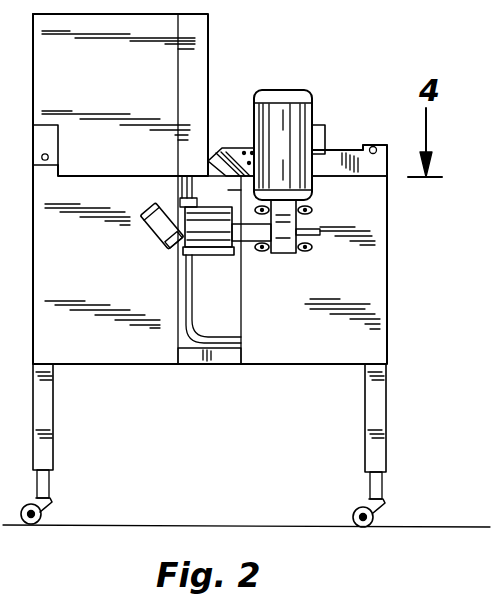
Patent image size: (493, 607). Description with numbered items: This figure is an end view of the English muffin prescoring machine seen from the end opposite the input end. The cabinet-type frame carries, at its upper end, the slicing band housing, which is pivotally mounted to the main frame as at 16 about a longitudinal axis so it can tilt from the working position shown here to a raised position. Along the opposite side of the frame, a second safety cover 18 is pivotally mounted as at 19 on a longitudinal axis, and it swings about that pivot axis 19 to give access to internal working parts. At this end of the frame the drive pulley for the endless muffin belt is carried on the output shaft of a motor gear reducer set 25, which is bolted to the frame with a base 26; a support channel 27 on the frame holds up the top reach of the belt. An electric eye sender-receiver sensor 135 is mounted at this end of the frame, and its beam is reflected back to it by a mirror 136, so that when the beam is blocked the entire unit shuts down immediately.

The pivot axis 16 is at (44, 168).
The second safety cover 18 is at (336, 158).
The pivot axis 19 is at (374, 145).
The motor gear reducer set 25 is at (305, 113).
The base 26 is at (280, 255).
The support channel 27 is at (181, 207).
The electric eye sender-receiver sensor 135 is at (156, 230).
The mirror 136 is at (235, 150).